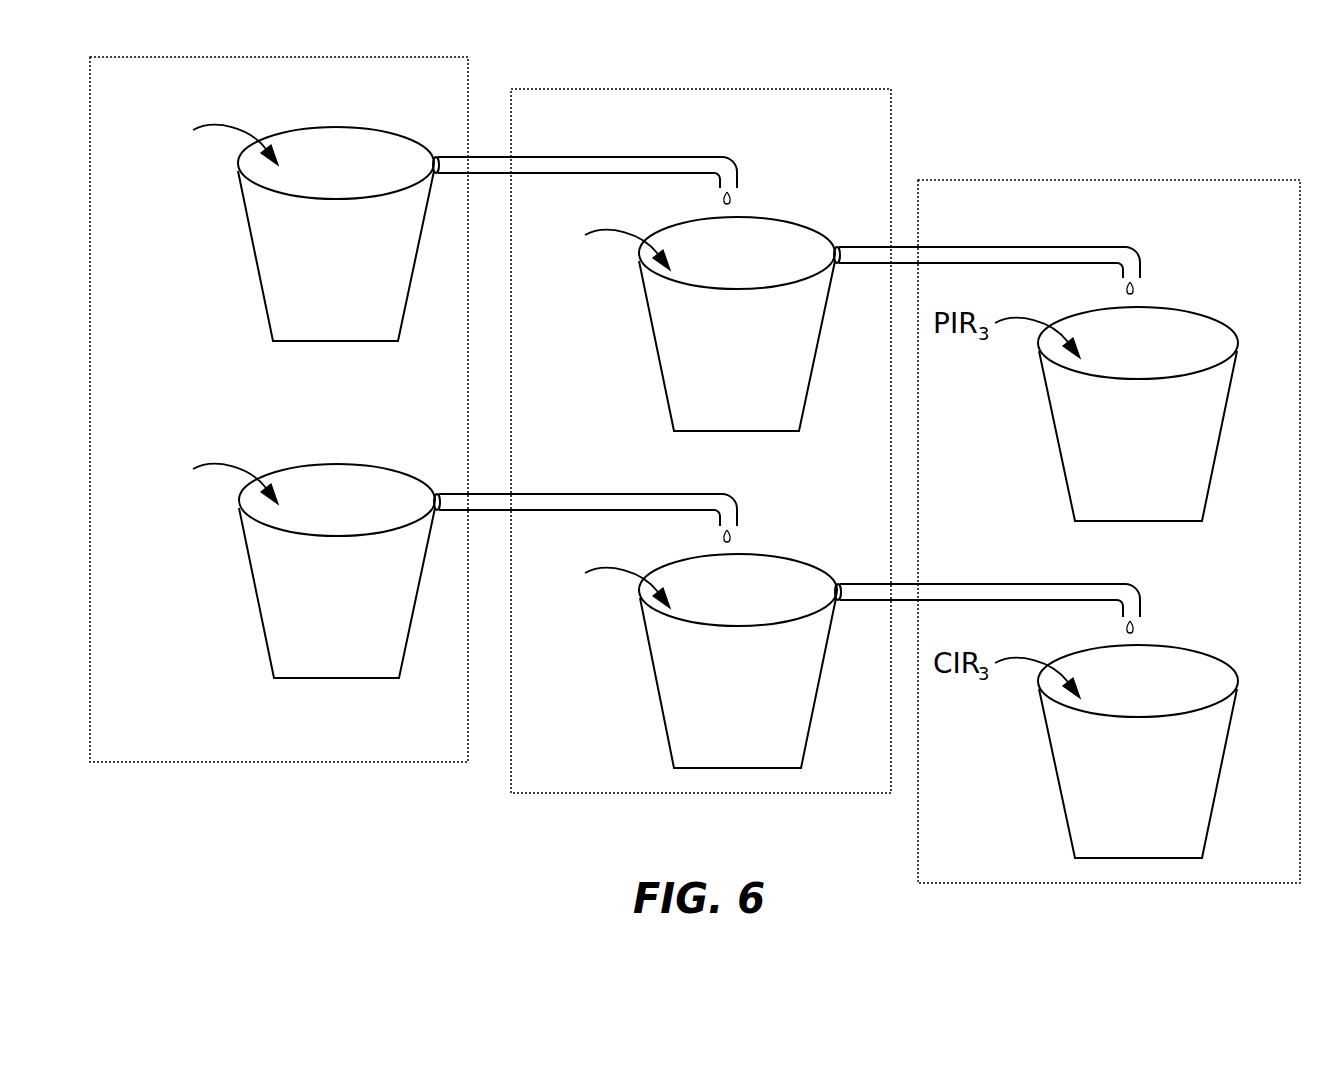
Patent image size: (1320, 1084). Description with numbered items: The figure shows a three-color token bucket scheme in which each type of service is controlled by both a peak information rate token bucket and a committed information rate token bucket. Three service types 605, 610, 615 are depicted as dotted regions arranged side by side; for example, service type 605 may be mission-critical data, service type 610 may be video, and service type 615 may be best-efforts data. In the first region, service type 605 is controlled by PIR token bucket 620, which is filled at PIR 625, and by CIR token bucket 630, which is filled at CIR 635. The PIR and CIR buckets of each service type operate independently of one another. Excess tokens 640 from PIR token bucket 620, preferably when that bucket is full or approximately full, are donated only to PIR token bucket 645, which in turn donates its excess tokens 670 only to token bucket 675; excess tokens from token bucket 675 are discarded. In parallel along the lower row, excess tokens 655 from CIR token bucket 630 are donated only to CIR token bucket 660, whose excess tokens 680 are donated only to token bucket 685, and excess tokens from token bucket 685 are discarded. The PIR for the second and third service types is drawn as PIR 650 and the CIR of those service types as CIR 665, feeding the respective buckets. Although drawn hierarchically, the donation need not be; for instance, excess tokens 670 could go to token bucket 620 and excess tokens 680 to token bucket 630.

The service type 605 is at (245, 762).
The service type 610 is at (562, 793).
The service type 615 is at (948, 883).
The PIR token bucket 620 is at (274, 316).
The PIR 625 is at (217, 128).
The CIR token bucket 630 is at (274, 655).
The CIR 635 is at (217, 467).
The excess tokens 640 is at (735, 198).
The PIR token bucket 645 is at (675, 405).
The peak information rate PIR2 input 650 is at (613, 230).
The excess tokens 655 is at (735, 535).
The CIR token bucket 660 is at (675, 742).
The committed information rate CIR2 input 665 is at (613, 568).
The excess tokens 670 is at (1144, 285).
The token bucket 675 is at (1076, 495).
The excess tokens 680 is at (1144, 620).
The token bucket 685 is at (1077, 833).